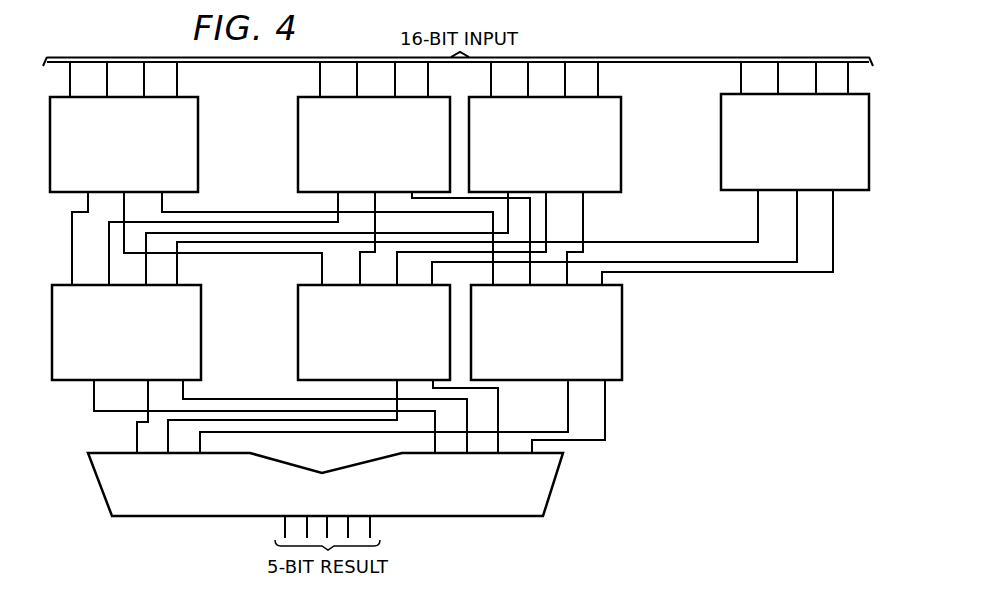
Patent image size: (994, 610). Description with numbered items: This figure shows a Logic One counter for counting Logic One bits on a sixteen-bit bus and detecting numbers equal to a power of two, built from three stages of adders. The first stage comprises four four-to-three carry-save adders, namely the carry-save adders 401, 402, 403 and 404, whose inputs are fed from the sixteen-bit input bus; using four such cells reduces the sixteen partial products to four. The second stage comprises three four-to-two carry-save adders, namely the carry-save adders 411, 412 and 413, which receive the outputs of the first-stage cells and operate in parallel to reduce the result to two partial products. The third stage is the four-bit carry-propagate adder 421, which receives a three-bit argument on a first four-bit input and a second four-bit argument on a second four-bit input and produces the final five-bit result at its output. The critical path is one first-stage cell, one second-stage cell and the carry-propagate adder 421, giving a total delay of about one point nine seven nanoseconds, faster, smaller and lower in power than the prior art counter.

The CSA43 401 is at (201, 143).
The CSA43 402 is at (297, 145).
The CSA43 403 is at (622, 140).
The CSA43 404 is at (720, 145).
The CSA42 411 is at (203, 333).
The CSA42 412 is at (297, 333).
The CSA42 413 is at (623, 330).
The 4-bit carry-propagate adder (CPA) 421 is at (556, 483).